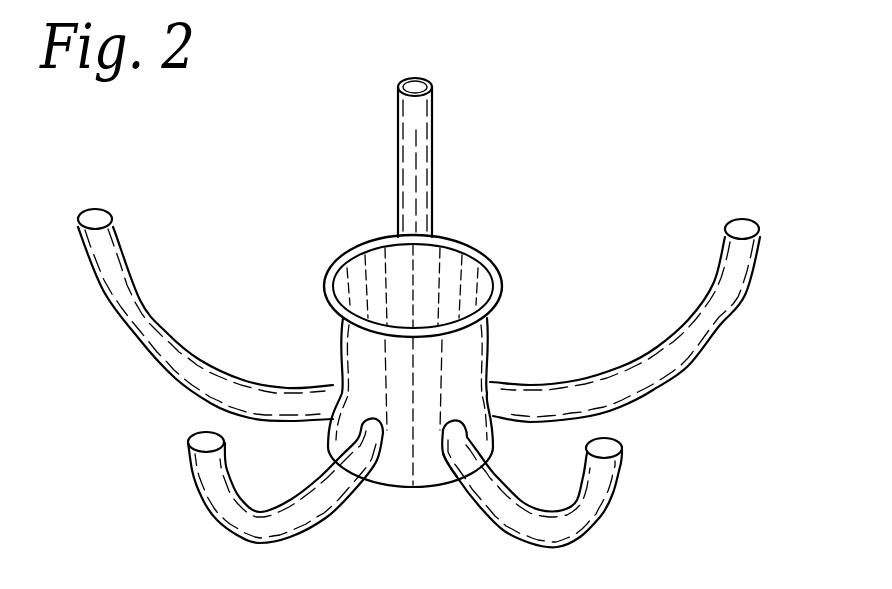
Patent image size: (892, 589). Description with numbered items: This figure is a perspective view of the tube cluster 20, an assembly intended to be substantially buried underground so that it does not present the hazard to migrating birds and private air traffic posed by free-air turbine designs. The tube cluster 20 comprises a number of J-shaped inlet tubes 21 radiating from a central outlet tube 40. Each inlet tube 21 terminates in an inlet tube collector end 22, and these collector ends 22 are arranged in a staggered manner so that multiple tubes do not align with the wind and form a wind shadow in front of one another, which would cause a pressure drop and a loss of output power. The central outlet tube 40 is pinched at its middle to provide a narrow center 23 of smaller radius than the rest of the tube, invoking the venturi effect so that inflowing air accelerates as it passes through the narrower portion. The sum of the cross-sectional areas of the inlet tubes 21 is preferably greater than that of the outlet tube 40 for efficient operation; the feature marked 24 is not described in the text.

The tube cluster 20 is at (573, 102).
The J-shaped inlet tubes 21 is at (673, 387).
The inlet tube collector ends 22 is at (625, 450).
The narrow center 23 is at (487, 360).
The hook junction 24 is at (443, 450).
The central outlet tube 40 is at (478, 247).